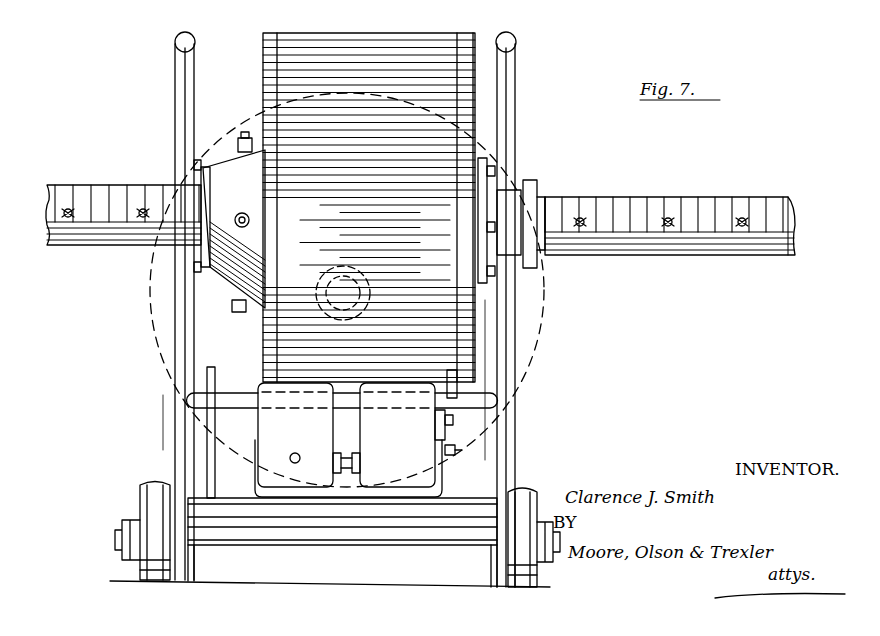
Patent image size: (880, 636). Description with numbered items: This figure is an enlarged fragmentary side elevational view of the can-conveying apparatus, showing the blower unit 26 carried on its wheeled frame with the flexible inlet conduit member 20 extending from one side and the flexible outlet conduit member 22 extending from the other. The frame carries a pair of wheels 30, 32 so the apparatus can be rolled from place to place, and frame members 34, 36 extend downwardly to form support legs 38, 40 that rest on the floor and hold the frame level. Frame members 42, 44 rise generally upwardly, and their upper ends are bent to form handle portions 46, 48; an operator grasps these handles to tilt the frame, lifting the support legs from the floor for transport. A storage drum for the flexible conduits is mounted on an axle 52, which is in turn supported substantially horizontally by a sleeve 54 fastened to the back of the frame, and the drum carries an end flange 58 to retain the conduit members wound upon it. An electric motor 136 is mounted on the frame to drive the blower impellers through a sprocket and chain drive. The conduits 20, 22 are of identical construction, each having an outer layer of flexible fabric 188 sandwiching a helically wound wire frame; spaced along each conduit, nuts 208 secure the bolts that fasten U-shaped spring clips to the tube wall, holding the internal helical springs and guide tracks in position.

The inlet conduit member 20 is at (71, 176).
The outlet conduit member 22 is at (673, 189).
The blower unit 26 is at (460, 31).
The wheel 30 is at (531, 490).
The wheel 32 is at (137, 496).
The frame member 34 is at (512, 351).
The frame member 36 is at (180, 325).
The support leg 38 is at (495, 573).
The support leg 40 is at (176, 563).
The frame member 42 is at (508, 165).
The frame member 44 is at (175, 162).
The handle portion 46 is at (518, 44).
The handle portion 48 is at (175, 40).
The axle 52 is at (355, 285).
The sleeve 54 is at (344, 277).
The flange 58 is at (246, 122).
The electric motor 136 is at (238, 372).
The outer layer of flexible fabric 188 is at (728, 197).
The nut 208 is at (84, 217).